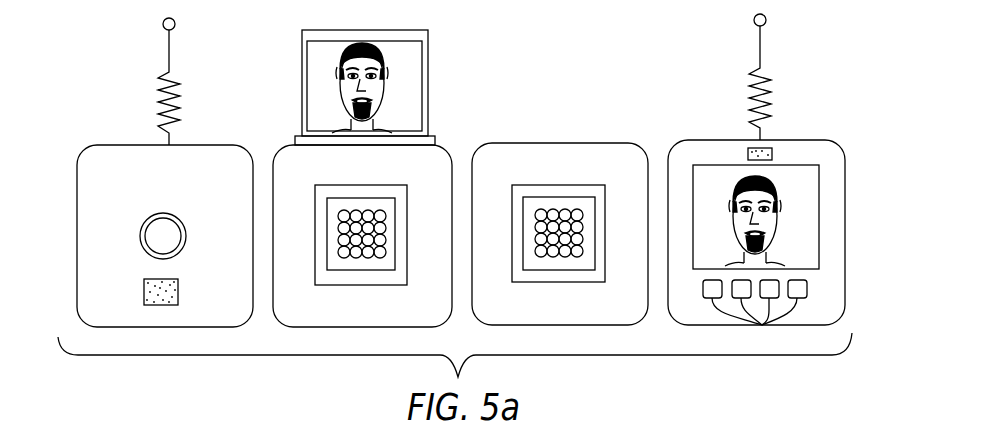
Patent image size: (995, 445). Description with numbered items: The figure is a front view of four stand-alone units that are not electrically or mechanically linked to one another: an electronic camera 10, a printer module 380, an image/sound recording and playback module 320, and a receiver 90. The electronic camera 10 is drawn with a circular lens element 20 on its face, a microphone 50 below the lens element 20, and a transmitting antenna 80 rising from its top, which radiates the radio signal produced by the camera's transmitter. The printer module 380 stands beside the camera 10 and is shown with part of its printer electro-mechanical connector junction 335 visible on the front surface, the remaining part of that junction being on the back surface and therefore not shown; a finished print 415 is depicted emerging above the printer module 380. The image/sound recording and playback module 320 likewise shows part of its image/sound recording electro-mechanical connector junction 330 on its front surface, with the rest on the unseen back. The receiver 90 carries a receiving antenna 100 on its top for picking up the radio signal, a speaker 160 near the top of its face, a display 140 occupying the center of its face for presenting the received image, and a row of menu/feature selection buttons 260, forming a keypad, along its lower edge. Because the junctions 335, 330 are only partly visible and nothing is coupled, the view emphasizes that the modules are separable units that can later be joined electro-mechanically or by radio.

The electronic camera 10 is at (93, 201).
The camera lens 20 is at (186, 243).
The microphone 50 is at (180, 295).
The transmitting antenna 80 is at (170, 62).
The finished print 415 is at (428, 56).
The printer module 380 is at (435, 157).
The printer electro-mechanical connector junction 335 is at (380, 273).
The image/sound recording and playback module 320 is at (598, 150).
The image/sound recording electro-mechanical connector junction 330 is at (578, 268).
The receiver 90 is at (835, 158).
The receiving antenna 100 is at (762, 48).
The speaker 160 is at (775, 155).
The display 140 is at (815, 253).
The menu/feature selection buttons 260 is at (755, 317).